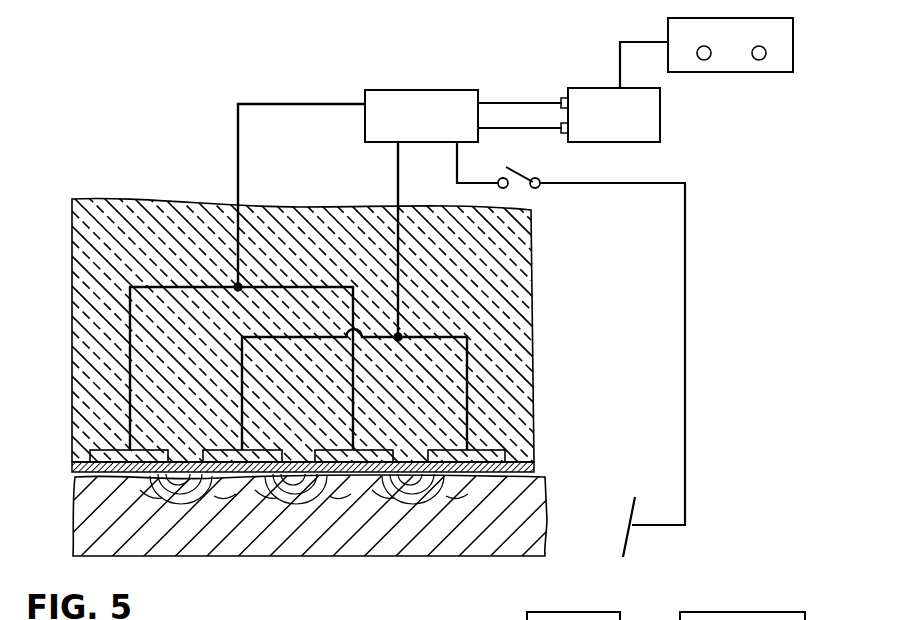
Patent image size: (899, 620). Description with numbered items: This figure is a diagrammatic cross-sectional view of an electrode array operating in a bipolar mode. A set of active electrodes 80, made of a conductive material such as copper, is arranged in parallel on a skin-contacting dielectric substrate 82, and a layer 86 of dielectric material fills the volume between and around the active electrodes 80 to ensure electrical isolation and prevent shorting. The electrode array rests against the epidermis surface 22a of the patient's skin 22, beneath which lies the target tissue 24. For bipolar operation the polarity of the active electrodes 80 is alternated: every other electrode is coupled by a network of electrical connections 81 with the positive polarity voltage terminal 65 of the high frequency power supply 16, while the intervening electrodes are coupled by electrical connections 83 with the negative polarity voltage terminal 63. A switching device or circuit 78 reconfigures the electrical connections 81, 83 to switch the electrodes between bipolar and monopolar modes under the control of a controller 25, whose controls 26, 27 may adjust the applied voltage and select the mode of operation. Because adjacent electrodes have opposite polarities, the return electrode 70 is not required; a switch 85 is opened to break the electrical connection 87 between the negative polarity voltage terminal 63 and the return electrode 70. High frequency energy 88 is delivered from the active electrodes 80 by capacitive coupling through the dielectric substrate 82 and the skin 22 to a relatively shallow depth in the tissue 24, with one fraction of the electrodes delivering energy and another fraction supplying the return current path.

The high frequency power supply 16 is at (660, 129).
The skin 22 is at (548, 471).
The epidermis surface 22a is at (80, 460).
The target tissue 24 is at (543, 521).
The controller 25 is at (793, 50).
The control 26 is at (704, 61).
The control 27 is at (759, 61).
The negative polarity voltage terminal 63 is at (566, 134).
The positive polarity voltage terminal 65 is at (565, 98).
The return electrode 70 is at (631, 551).
The switching device or circuit 78 is at (420, 90).
The active electrodes 80 is at (153, 448).
The electrical connections 81 is at (271, 103).
The dielectric substrate 82 is at (534, 462).
The electrical connections 83 is at (398, 165).
The switch 85 is at (519, 174).
The dielectric layer 86 is at (130, 220).
The electrical connection 87 is at (685, 342).
The high frequency energy 88 is at (250, 500).